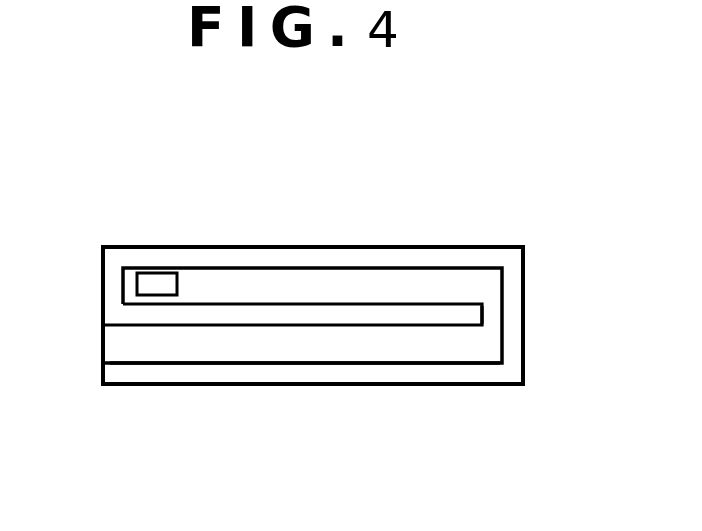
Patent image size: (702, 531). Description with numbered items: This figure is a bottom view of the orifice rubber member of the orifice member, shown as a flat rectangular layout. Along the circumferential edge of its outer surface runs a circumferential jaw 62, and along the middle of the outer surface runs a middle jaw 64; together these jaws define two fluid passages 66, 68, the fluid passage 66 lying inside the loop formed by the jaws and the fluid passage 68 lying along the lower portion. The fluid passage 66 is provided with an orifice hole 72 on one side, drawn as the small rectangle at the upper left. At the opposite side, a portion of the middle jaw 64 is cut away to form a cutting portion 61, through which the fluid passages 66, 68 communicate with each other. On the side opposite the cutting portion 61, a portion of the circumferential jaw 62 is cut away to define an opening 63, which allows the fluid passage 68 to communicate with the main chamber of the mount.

The cutting portion 61 is at (484, 310).
The circumferential jaw 62 is at (482, 373).
The opening 63 is at (118, 360).
The middle jaw 64 is at (393, 317).
The fluid passage 66 is at (268, 285).
The fluid passage 68 is at (313, 352).
The orifice hole 72 is at (158, 290).